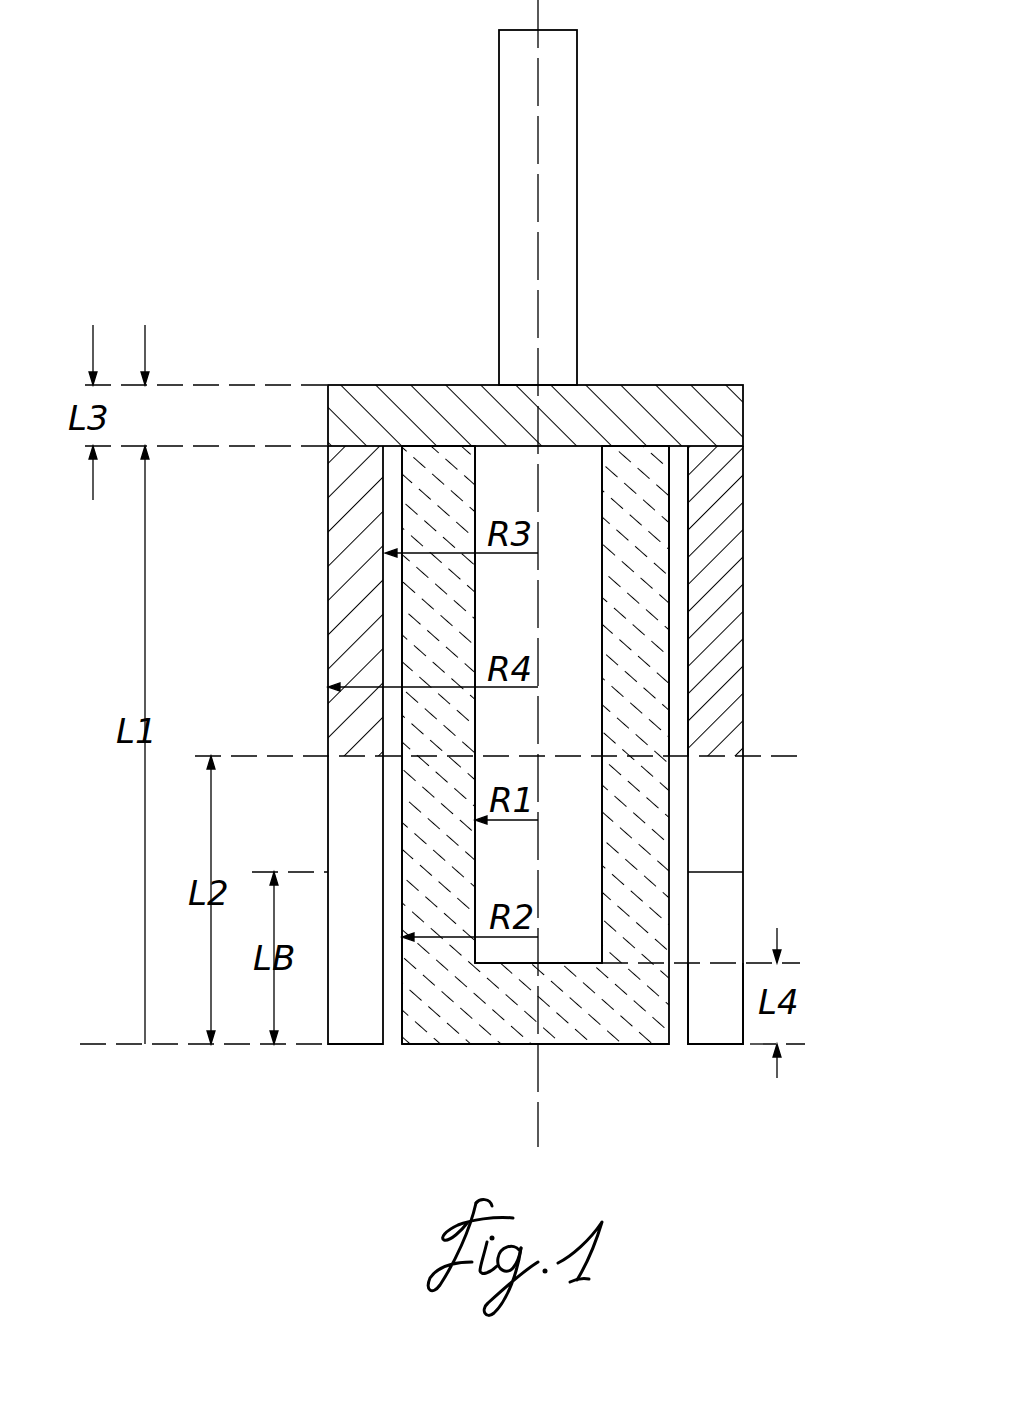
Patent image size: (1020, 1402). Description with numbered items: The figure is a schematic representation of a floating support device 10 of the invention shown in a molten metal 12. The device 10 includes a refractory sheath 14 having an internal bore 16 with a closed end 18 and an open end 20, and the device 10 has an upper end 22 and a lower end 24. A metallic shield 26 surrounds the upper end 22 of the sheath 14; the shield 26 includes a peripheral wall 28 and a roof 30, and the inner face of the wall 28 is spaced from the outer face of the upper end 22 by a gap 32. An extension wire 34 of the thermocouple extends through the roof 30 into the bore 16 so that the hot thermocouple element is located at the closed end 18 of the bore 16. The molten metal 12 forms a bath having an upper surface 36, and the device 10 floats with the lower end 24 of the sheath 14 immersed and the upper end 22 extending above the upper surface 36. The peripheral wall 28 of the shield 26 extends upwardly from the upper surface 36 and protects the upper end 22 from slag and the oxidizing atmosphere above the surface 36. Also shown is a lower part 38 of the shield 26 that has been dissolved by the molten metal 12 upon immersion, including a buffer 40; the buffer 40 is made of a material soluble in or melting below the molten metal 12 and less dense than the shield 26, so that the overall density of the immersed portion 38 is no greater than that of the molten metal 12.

The device 10 is at (829, 188).
The molten metal 12 is at (852, 895).
The refractory sheath 14 is at (440, 1045).
The internal bore 16 is at (594, 612).
The closed end 18 is at (565, 960).
The open end 20 is at (602, 480).
The upper end 22 is at (398, 503).
The lower end 24 is at (398, 802).
The metallic shield 26 is at (326, 600).
The peripheral wall 28 is at (745, 686).
The roof 30 is at (710, 385).
The gap 32 is at (690, 516).
The extension wire 34 is at (565, 182).
The upper surface 36 is at (778, 752).
The lower part of shield 38 is at (748, 869).
The buffer 40 is at (712, 1015).